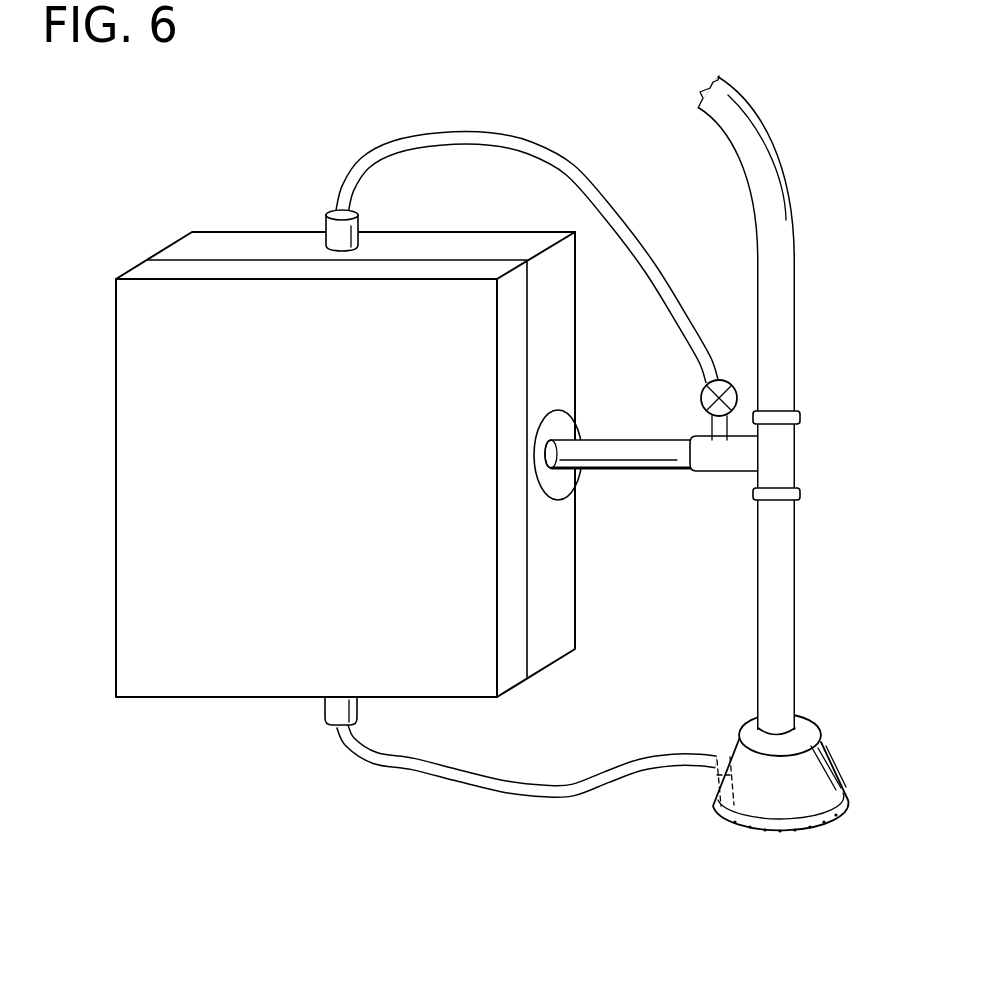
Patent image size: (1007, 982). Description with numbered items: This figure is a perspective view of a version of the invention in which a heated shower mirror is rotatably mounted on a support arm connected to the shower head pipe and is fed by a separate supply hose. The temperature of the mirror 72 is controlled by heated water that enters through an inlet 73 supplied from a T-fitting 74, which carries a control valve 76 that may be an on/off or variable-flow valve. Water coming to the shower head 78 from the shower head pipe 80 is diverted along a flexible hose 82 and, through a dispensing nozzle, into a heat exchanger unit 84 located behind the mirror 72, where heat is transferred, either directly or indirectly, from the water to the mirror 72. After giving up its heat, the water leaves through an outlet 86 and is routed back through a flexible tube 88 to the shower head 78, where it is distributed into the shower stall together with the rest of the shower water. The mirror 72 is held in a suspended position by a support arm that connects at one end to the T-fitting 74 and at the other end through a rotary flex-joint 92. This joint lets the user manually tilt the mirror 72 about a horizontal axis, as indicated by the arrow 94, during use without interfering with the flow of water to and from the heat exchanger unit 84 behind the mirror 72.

The mirror 72 is at (336, 491).
The inlet 73 is at (323, 224).
The T-fitting 74 is at (790, 460).
The control valve 76 is at (700, 400).
The shower head 78 is at (805, 785).
The shower head pipe 80 is at (742, 155).
The flexible hose 82 is at (452, 130).
The heat exchanger unit 84 is at (552, 583).
The outlet 86 is at (322, 718).
The flexible tube 88 is at (599, 778).
The rotary flex-joint 92 is at (605, 469).
The arrow 94 is at (555, 407).